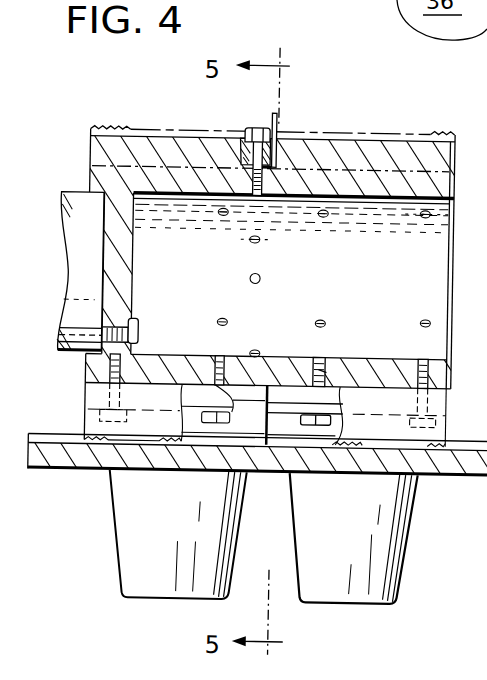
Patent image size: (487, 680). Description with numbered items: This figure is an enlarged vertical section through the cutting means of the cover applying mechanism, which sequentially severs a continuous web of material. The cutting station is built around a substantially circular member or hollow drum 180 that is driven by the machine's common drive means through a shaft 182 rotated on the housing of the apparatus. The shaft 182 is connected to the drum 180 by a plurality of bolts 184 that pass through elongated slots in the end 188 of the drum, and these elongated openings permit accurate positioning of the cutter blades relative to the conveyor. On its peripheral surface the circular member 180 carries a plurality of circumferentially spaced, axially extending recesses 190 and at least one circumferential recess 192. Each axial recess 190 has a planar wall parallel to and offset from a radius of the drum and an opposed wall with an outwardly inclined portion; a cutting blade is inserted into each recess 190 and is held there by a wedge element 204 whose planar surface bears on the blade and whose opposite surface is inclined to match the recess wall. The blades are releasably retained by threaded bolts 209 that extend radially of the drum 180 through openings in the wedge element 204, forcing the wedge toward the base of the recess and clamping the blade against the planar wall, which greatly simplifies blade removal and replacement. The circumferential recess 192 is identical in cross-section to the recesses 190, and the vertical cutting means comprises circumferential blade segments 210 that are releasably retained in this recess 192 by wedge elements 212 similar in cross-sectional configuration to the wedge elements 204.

The circular member 180 is at (86, 168).
The shaft 182 is at (62, 226).
The bolts 184 is at (109, 331).
The end of the drum 188 is at (114, 225).
The axially extending recesses 190 is at (209, 362).
The circumferential recess 192 is at (228, 158).
The wedge element 204 is at (290, 405).
The bolts 209 is at (326, 373).
The circumferential blade segments 210 is at (275, 120).
The wedge elements 212 is at (246, 129).